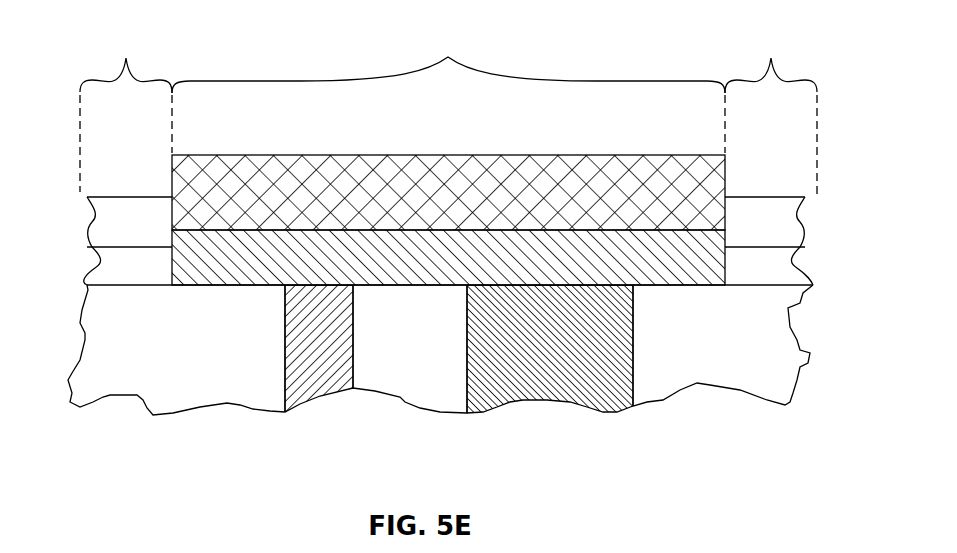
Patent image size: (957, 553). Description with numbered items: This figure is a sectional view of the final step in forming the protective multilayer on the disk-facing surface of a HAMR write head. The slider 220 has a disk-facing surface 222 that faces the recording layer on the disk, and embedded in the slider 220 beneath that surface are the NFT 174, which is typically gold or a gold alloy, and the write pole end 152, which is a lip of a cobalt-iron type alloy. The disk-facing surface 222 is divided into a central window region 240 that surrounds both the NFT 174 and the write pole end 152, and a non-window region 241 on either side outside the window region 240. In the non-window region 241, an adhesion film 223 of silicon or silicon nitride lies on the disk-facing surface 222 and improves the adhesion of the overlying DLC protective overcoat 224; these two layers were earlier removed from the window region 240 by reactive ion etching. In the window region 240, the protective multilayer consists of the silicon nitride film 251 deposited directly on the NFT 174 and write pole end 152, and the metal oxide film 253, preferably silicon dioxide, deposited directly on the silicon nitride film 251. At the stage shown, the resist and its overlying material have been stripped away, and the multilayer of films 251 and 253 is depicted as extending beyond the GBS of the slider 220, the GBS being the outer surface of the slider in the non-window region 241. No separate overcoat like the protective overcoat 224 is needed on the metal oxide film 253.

The slider 220 is at (783, 390).
The disk-facing surface 222 is at (815, 287).
The adhesion film 223 is at (92, 262).
The protective overcoat 224 is at (92, 215).
The window region 240 is at (448, 88).
The non-window region 241 is at (448, 109).
The silicon nitride film 251 is at (277, 243).
The metal oxide film 253 is at (607, 173).
The element GBS is at (788, 197).
The NFT 174 is at (302, 407).
The write pole end 152 is at (597, 410).